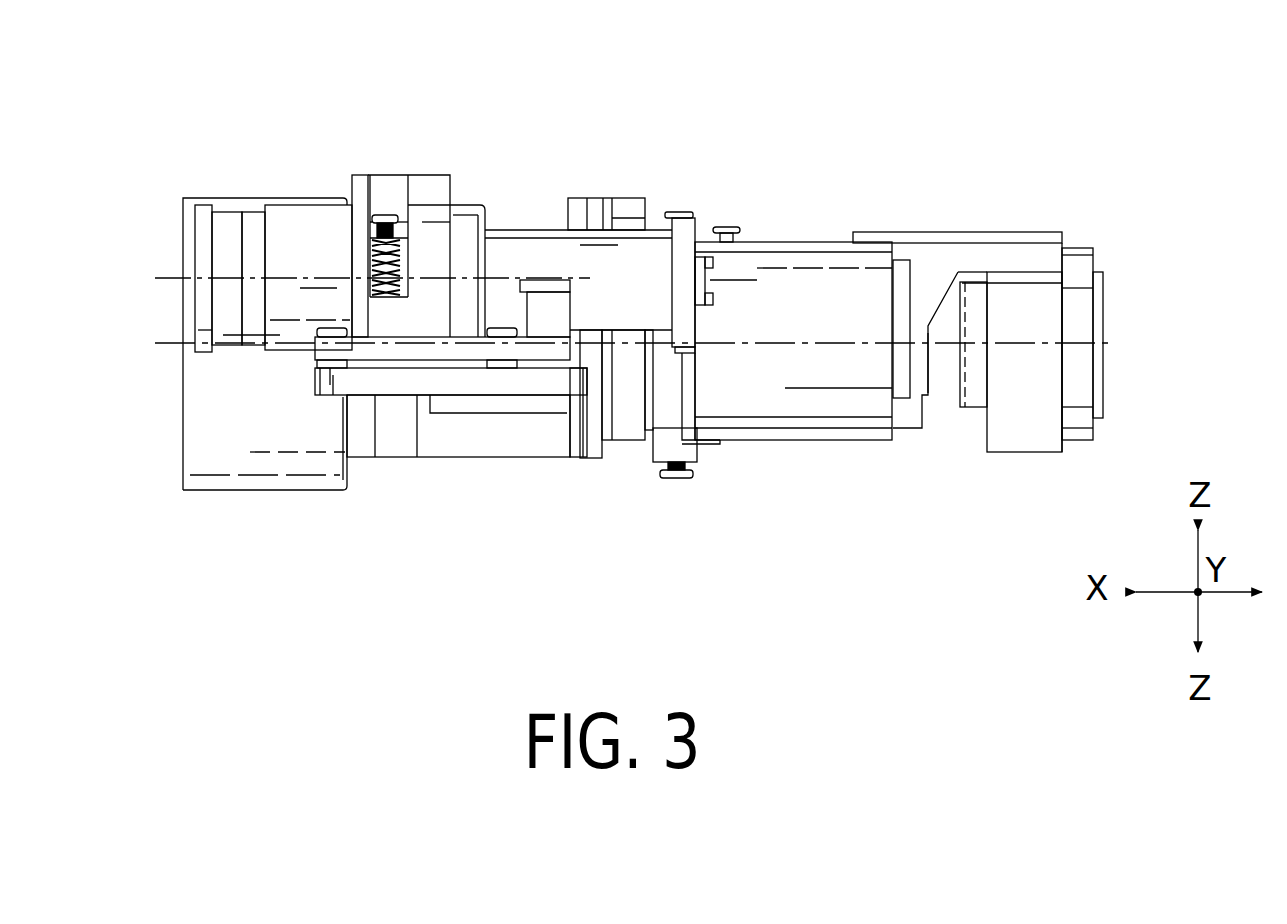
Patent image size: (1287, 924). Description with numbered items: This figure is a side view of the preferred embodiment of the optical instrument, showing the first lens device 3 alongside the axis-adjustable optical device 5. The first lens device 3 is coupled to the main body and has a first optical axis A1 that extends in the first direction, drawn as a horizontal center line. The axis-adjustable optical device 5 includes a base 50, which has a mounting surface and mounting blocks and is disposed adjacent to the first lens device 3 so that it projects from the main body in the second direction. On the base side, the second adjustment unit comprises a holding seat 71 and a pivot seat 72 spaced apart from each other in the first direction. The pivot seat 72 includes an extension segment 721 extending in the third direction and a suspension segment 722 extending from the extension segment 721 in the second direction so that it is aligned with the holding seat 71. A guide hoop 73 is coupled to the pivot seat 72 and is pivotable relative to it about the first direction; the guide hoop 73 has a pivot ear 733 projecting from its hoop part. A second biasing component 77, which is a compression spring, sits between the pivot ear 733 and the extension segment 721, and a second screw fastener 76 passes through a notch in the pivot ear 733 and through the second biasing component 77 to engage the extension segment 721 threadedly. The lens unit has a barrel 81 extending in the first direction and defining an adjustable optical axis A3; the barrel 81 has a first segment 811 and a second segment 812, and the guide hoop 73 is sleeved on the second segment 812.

The first lens device 3 is at (175, 208).
The axis-adjustable optical device 5 is at (374, 171).
The base 50 is at (325, 398).
The holding seat 71 is at (551, 316).
The pivot seat 72 is at (428, 288).
The extension segment 721 is at (392, 300).
The suspension segment 722 is at (390, 213).
The guide hoop 73 is at (356, 183).
The pivot ear 733 is at (372, 236).
The second screw fastener 76 is at (397, 262).
The second biasing component 77 is at (422, 225).
The barrel 81 is at (295, 333).
The first segment 811 is at (650, 250).
The second segment 812 is at (278, 307).
The first optical axis A1 is at (609, 342).
The adjustable optical axis A3 is at (349, 277).